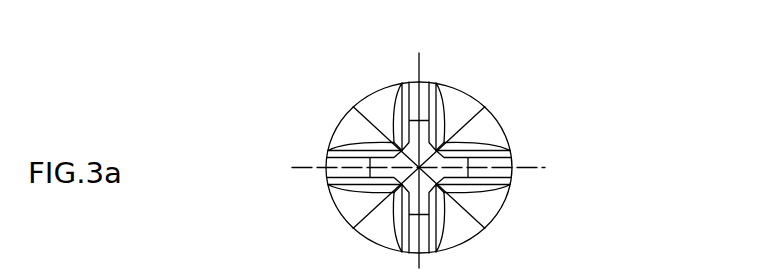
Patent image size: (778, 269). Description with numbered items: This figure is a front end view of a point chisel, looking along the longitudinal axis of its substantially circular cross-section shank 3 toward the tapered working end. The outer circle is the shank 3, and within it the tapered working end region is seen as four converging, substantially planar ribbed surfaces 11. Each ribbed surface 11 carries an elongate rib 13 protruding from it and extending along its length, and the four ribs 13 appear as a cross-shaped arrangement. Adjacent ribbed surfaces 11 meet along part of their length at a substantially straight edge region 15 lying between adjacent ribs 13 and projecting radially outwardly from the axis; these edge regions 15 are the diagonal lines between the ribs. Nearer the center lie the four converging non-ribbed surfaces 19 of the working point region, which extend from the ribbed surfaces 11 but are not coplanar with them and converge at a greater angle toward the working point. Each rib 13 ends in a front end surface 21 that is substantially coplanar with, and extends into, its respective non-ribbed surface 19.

The shank 3 is at (328, 138).
The ribbed surface 11 is at (383, 108).
The elongate rib 13 is at (485, 175).
The substantially straight edge region 15 is at (470, 124).
The non-ribbed surface 19 is at (403, 172).
The front end surface 21 is at (420, 130).